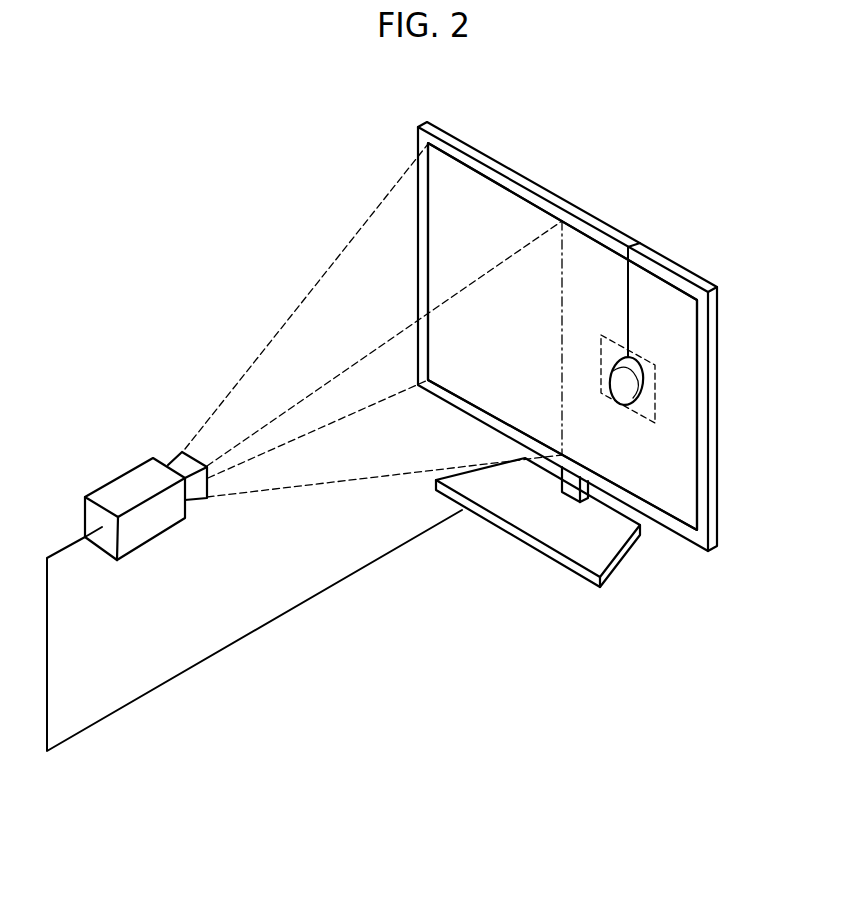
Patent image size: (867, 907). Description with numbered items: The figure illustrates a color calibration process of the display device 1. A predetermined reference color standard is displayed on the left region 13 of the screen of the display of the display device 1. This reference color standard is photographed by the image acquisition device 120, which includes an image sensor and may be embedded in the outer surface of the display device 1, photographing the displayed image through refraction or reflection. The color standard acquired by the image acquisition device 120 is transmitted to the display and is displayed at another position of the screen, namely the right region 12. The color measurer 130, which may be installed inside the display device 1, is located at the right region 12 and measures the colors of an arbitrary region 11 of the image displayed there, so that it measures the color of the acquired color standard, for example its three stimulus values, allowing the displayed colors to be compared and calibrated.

The display device 1 is at (567, 337).
The arbitrary region 11 is at (642, 421).
The right region 12 is at (587, 253).
The left region 13 is at (463, 185).
The image acquisition device 120 is at (122, 488).
The color measurer 130 is at (638, 397).